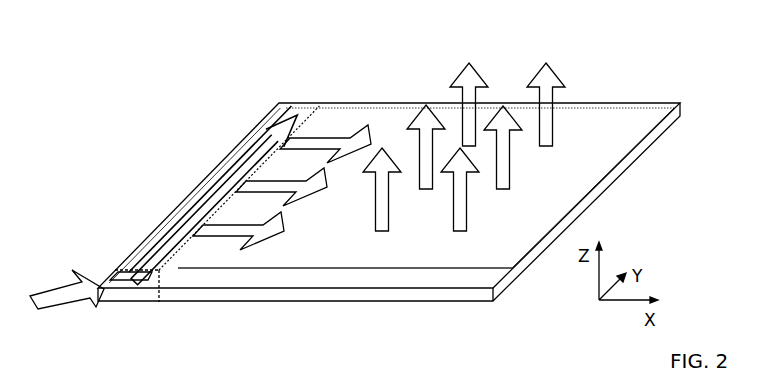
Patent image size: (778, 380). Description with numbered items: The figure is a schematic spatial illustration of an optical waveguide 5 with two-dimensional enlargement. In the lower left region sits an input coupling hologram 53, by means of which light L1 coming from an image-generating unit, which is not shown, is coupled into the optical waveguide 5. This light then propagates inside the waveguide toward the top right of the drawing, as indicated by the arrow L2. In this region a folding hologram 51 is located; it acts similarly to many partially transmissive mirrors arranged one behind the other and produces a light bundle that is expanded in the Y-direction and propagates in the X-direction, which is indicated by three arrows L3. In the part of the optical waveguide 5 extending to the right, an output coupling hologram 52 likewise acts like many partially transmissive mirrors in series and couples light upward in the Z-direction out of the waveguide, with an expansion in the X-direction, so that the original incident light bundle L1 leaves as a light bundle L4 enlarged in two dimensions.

The optical waveguide 5 is at (680, 103).
The folding hologram 51 is at (284, 110).
The output coupling hologram 52 is at (435, 262).
The input coupling hologram 53 is at (130, 283).
The light L1 is at (62, 300).
The arrow L2 is at (215, 170).
The arrows L3 is at (347, 138).
The light bundle L4 is at (472, 76).